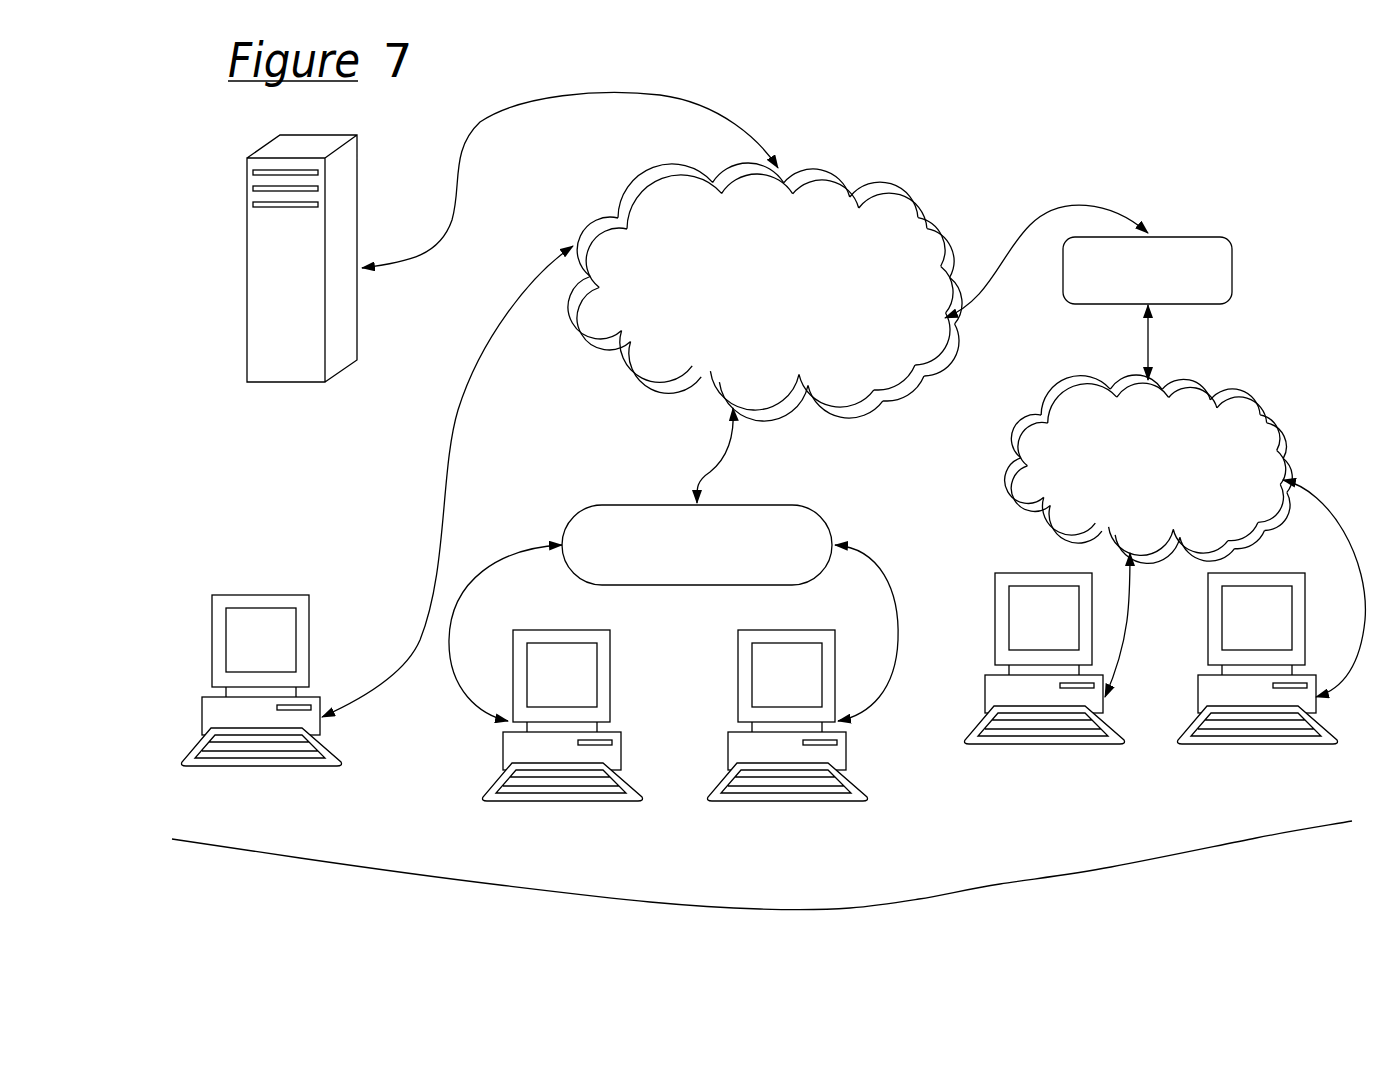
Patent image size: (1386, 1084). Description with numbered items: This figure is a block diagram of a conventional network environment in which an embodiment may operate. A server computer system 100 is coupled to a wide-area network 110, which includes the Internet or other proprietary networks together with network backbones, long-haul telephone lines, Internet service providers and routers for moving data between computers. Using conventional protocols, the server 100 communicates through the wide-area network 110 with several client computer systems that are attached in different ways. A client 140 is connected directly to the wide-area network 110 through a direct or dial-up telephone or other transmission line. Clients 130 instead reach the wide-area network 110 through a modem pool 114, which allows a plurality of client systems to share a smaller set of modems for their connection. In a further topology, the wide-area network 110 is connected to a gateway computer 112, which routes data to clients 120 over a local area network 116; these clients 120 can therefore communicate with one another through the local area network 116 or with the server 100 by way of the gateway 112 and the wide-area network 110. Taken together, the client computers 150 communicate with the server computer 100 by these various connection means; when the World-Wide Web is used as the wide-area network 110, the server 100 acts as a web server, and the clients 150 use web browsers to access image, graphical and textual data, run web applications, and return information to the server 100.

The server computer system 100 is at (247, 172).
The wide-area network 110 is at (838, 172).
The gateway computer 112 is at (1196, 232).
The modem pool 114 is at (660, 502).
The local area network 116 is at (1223, 380).
The client computer systems 120 is at (1028, 573).
The client computer systems 130 is at (502, 745).
The client computer system 140 is at (255, 583).
The client computers 150 is at (762, 897).